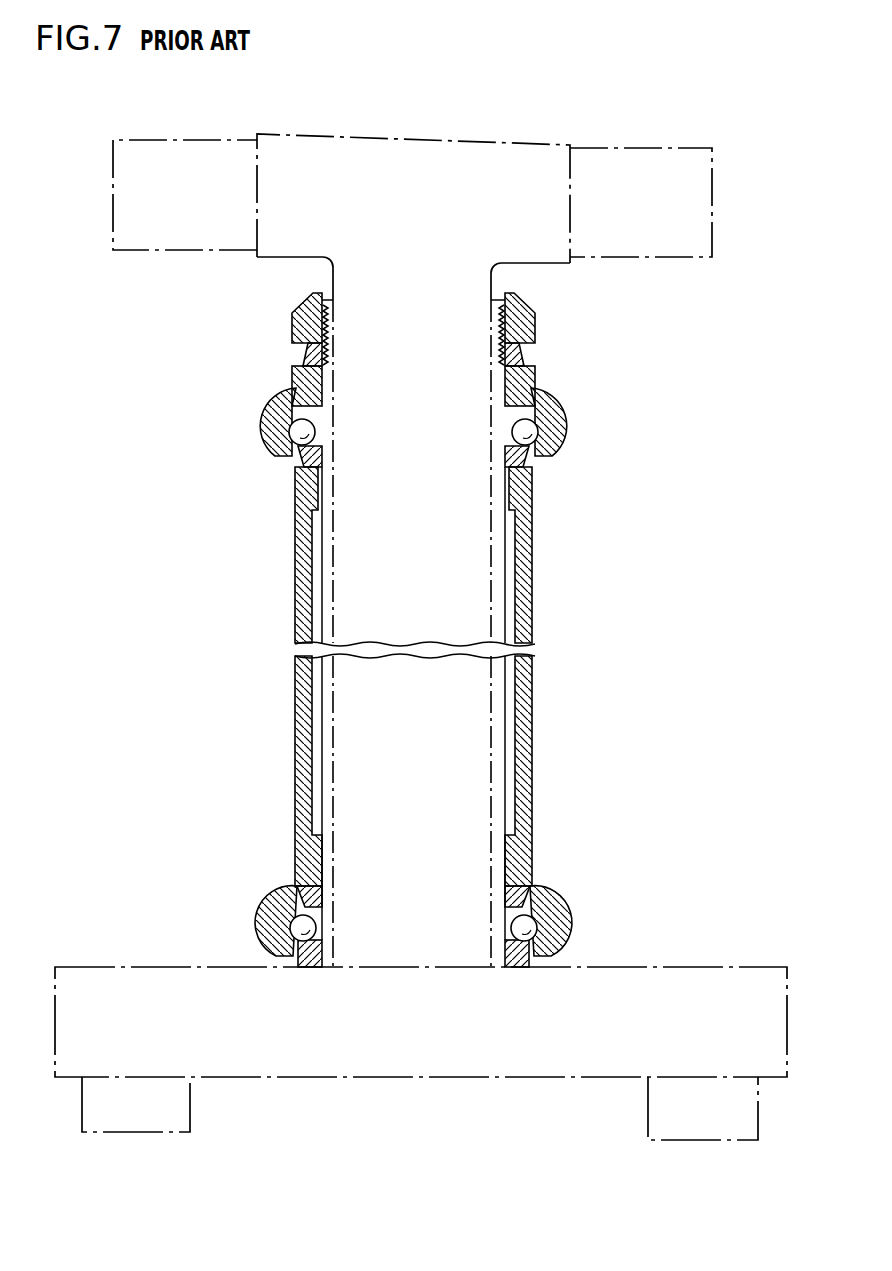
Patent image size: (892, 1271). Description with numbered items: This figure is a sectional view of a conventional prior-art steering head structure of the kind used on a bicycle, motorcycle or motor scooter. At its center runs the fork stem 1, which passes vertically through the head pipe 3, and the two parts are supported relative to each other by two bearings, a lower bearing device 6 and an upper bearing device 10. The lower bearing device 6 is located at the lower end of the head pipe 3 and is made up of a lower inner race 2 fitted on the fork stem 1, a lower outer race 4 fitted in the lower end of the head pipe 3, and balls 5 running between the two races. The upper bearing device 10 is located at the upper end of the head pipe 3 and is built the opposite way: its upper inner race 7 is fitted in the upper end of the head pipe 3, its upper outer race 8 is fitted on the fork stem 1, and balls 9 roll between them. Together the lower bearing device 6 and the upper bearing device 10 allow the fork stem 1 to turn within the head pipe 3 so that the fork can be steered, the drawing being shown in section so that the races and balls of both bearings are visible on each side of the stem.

The fork stem 1 is at (506, 702).
The lower inner race 2 is at (521, 970).
The head pipe 3 is at (533, 766).
The lower outer race 4 is at (562, 917).
The balls 5 is at (548, 905).
The lower bearing device 6 is at (580, 943).
The upper inner race 7 is at (518, 453).
The upper outer race 8 is at (561, 427).
The balls 9 is at (514, 426).
The upper bearing device 10 is at (549, 386).